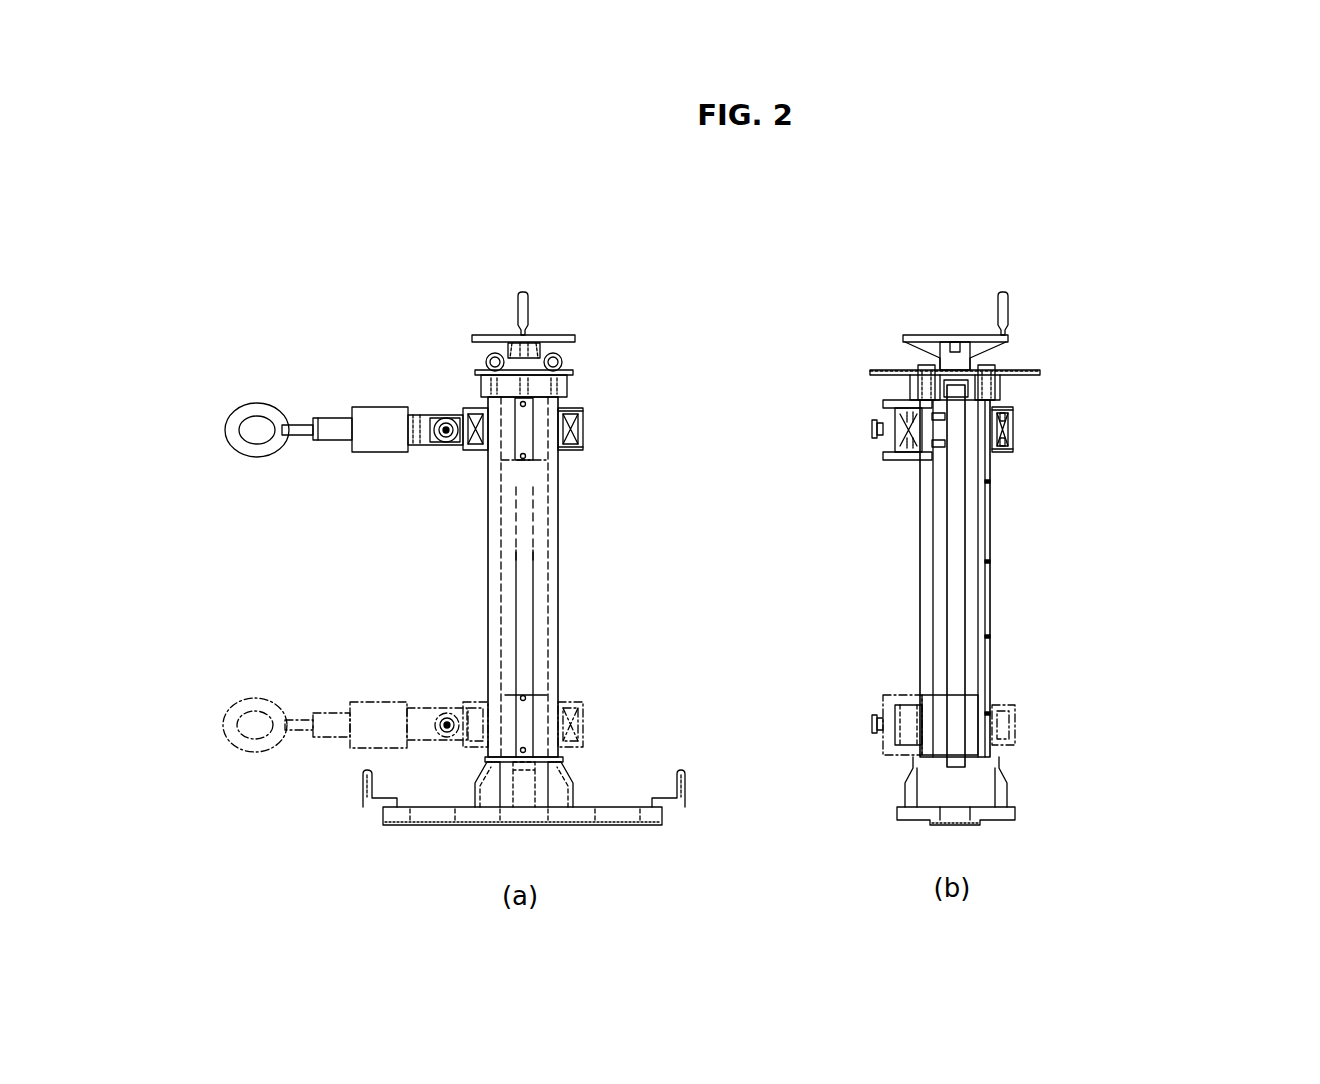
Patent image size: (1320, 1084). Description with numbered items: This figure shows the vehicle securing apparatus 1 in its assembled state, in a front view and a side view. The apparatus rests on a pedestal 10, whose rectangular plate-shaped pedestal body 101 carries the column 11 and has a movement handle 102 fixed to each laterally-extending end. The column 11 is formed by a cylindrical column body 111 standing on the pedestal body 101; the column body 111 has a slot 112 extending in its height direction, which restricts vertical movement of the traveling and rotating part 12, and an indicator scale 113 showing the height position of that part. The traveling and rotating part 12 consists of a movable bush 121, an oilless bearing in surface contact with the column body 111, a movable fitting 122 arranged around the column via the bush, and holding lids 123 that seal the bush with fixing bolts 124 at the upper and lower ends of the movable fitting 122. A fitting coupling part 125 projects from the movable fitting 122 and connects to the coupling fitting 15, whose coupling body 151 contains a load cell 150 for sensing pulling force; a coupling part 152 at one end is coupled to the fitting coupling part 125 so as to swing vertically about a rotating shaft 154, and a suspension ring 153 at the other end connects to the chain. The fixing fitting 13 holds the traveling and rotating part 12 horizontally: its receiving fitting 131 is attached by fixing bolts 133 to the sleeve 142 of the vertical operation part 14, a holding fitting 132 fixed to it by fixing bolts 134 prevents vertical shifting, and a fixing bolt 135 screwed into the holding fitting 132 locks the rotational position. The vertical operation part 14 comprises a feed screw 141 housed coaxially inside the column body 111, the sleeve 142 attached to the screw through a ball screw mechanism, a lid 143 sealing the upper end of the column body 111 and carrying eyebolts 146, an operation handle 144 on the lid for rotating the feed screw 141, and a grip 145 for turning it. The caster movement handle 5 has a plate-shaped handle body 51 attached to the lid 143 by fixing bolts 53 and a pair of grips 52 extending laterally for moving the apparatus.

The vehicle securing apparatus 1 is at (172, 282).
The caster movement handle 5 is at (578, 392).
The pedestal 10 is at (684, 757).
The pedestal body 101 is at (583, 812).
The movement handle 102 is at (630, 722).
The column 11 is at (824, 602).
The column body 111 is at (560, 610).
The slot 112 is at (527, 598).
The indicator scale 113 is at (990, 595).
The traveling and rotating part 12 is at (794, 551).
The movable bush 121 is at (570, 432).
The movable fitting 122 is at (585, 424).
The holding lid 123 is at (567, 410).
The fixing bolt 124 is at (1013, 420).
The fitting coupling part 125 is at (460, 453).
The fixing fitting 13 is at (847, 577).
The receiving fitting 131 is at (925, 447).
The holding fitting 132 is at (890, 445).
The fixing bolt 133 is at (930, 460).
The fixing bolt 134 is at (885, 403).
The fixing bolt 135 is at (803, 590).
The vertical operation part 14 is at (758, 473).
The feed screw 141 is at (993, 407).
The sleeve 142 is at (505, 335).
The lid 143 is at (478, 378).
The operation handle 144 is at (552, 338).
The grip 145 is at (528, 294).
The eyebolt 146 is at (578, 298).
The coupling fitting 15 is at (312, 510).
The load cell 150 is at (370, 410).
The coupling body 151 is at (325, 417).
The coupling part 152 is at (418, 415).
The suspension ring 153 is at (240, 406).
The rotating shaft 154 is at (409, 521).
The handle body 51 is at (925, 397).
The grip 52 is at (875, 372).
The fixing bolt 53 is at (953, 347).